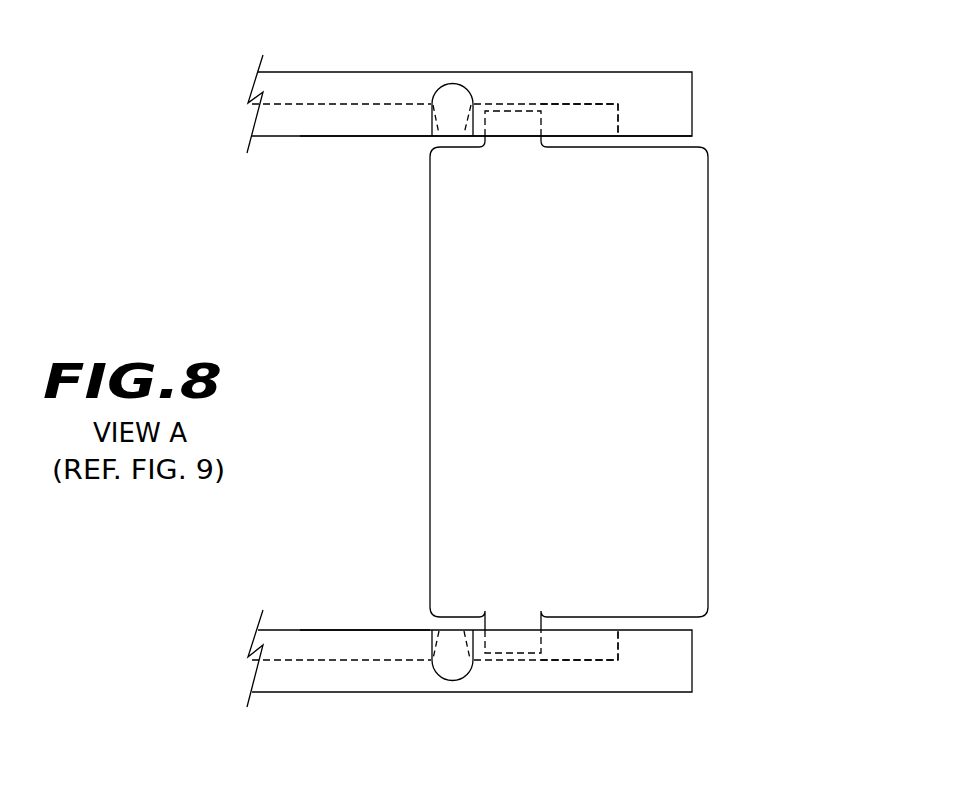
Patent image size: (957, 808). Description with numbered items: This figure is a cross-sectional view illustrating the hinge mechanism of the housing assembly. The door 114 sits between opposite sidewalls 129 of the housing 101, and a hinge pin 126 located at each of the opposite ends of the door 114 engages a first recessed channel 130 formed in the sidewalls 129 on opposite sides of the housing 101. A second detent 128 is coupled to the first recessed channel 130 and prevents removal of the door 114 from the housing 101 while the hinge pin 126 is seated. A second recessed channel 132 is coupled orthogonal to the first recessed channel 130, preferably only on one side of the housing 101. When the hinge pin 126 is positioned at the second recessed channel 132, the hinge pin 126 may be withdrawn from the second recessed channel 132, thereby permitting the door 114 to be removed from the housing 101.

The housing 101 is at (302, 72).
The door 114 is at (708, 402).
The hinge pin 126 is at (517, 127).
The second detent 128 is at (430, 122).
The sidewalls 129 is at (298, 137).
The first recessed channel 130 is at (588, 118).
The second recessed channel 132 is at (462, 83).